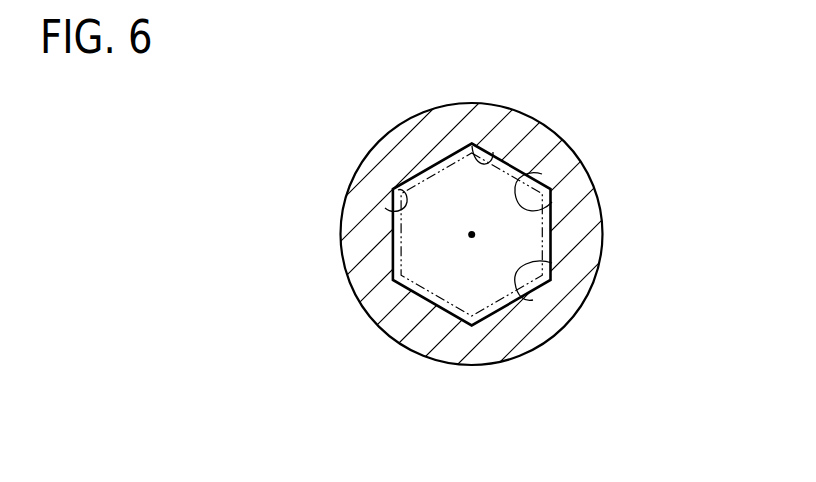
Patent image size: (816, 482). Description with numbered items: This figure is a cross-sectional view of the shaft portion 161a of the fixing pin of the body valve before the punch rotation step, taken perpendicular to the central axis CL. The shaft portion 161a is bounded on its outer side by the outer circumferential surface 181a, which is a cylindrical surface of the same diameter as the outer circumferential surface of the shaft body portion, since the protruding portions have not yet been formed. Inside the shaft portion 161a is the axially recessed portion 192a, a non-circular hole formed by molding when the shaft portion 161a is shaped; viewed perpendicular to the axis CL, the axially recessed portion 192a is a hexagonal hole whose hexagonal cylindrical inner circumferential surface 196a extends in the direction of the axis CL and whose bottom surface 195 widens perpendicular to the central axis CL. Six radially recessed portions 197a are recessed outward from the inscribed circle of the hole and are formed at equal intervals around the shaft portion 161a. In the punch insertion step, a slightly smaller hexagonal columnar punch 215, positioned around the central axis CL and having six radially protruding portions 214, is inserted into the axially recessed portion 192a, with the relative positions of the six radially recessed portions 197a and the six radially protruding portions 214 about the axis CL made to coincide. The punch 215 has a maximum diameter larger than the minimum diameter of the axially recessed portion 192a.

The outer circumferential surface 181a is at (575, 150).
The shaft portion 161a is at (533, 138).
The bottom surface 195 is at (450, 202).
The radially protruding portions 214 is at (378, 285).
The punch 215 is at (419, 299).
The radially recessed portions 197a is at (493, 152).
The inner circumferential surface 196a is at (552, 202).
The axially recessed portion 192a is at (552, 263).
The central axis CL is at (472, 238).